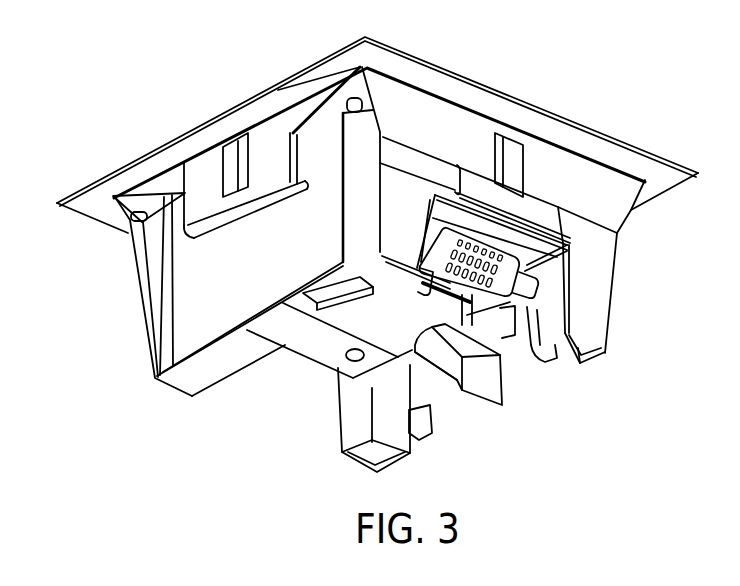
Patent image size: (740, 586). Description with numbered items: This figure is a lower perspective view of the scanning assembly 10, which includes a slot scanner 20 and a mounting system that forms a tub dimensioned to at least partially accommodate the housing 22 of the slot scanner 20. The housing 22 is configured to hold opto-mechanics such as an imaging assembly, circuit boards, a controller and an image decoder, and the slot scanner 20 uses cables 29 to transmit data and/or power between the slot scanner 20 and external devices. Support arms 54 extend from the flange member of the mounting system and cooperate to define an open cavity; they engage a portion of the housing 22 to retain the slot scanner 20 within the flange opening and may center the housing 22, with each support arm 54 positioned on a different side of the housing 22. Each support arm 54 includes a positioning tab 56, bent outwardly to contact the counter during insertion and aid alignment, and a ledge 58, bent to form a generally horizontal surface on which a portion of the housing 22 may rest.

The scanning assembly 10 is at (85, 53).
The slot scanner 20 is at (132, 348).
The housing 22 is at (155, 300).
The cables 29 is at (507, 285).
The support arms 54 is at (187, 177).
The positioning tab 56 is at (237, 152).
The ledge 58 is at (209, 225).